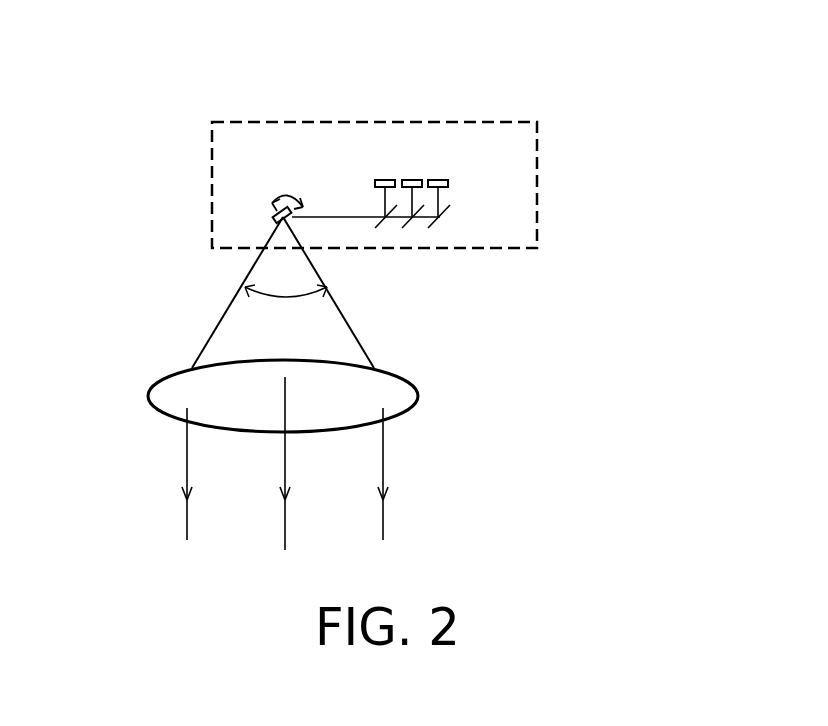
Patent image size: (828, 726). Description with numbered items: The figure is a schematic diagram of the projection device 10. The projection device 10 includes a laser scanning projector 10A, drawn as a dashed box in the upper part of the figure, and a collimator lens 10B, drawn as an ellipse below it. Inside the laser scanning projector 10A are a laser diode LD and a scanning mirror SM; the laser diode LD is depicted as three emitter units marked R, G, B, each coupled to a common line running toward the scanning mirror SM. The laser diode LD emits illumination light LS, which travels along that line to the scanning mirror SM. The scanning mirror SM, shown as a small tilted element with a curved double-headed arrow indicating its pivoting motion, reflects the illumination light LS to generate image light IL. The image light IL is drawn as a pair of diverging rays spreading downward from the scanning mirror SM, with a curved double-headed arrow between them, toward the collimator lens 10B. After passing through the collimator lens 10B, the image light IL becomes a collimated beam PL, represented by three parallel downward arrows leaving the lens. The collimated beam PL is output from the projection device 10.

The projection device 10 is at (612, 536).
The laser scanning projector 10A is at (209, 175).
The collimator lens 10B is at (147, 395).
The illumination light LS is at (322, 215).
The laser diode LD is at (439, 146).
The red laser diode R is at (386, 187).
The green laser diode G is at (413, 187).
The blue laser diode B is at (439, 187).
The scanning mirror SM is at (263, 215).
The image light IL is at (227, 307).
The collimated beam PL is at (187, 525).